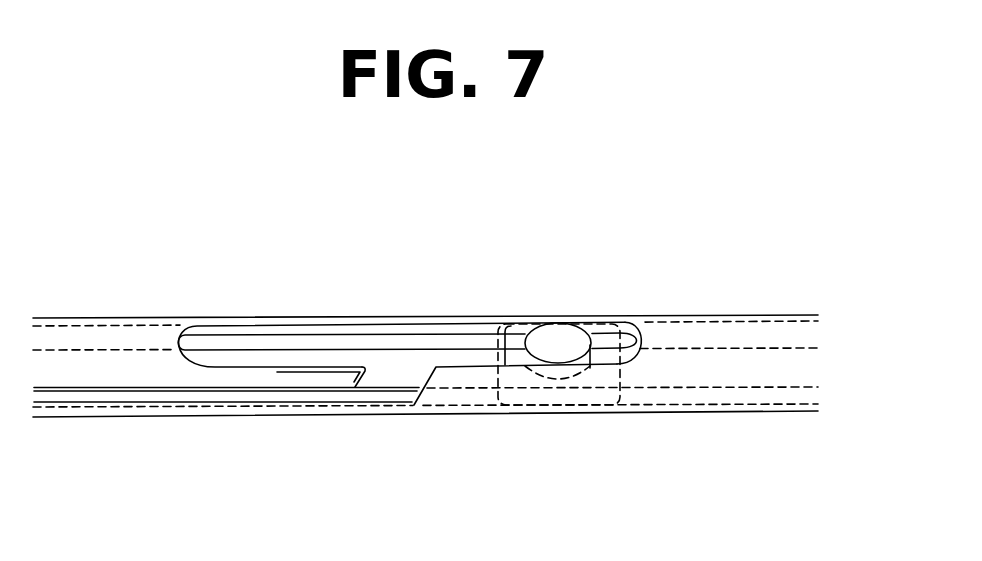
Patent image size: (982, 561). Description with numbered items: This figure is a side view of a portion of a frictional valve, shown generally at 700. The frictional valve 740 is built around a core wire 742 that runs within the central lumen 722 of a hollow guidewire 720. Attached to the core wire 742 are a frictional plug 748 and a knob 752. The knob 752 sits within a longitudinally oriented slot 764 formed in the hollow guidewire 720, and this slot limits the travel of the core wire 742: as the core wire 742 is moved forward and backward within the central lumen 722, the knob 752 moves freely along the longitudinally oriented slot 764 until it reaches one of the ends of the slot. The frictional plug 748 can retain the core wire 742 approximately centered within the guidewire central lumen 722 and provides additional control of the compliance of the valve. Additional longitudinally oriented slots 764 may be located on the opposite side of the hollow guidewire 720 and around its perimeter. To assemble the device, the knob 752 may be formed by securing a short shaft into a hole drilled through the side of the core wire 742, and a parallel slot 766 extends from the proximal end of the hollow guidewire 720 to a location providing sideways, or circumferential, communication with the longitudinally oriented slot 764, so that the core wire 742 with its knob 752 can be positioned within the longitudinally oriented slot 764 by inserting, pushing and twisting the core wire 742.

The portion of a frictional valve 700 is at (103, 209).
The hollow guidewire 720 is at (747, 412).
The guidewire central lumen 722 is at (820, 393).
The frictional valve 740 is at (314, 282).
The core wire 742 is at (668, 388).
The frictional plug 748 is at (505, 350).
The knob 752 is at (533, 324).
The longitudinally oriented slot 764 is at (277, 368).
The parallel slot 766 is at (332, 408).